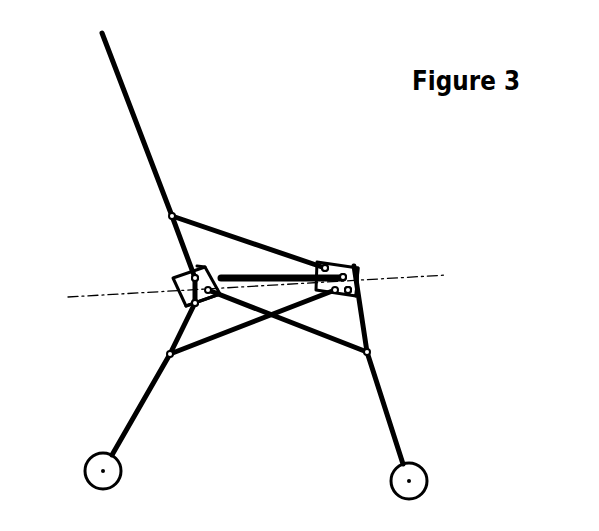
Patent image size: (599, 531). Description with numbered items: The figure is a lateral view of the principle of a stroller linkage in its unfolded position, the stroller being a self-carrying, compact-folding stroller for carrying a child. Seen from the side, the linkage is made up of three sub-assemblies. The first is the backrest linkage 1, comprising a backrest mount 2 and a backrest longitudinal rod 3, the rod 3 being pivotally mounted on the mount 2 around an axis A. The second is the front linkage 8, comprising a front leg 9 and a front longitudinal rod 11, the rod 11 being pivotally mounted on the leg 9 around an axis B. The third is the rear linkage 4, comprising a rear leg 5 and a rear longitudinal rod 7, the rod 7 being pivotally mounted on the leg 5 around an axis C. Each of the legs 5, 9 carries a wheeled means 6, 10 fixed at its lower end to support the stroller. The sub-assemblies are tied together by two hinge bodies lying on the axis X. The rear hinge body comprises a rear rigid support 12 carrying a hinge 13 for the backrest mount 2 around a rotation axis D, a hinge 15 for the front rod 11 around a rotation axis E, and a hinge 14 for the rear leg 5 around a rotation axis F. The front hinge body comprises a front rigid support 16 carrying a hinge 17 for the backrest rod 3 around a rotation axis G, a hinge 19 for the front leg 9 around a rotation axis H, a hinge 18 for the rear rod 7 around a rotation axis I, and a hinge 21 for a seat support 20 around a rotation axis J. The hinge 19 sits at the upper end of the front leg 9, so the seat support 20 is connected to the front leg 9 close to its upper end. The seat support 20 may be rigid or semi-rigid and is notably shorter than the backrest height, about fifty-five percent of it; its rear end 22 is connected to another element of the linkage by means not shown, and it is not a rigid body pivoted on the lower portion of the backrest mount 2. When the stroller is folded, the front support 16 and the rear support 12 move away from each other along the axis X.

The backrest linkage 1 is at (190, 121).
The backrest mount 2 is at (142, 138).
The backrest longitudinal rod 3 is at (277, 271).
The rear linkage 4 is at (120, 393).
The rear leg 5 is at (132, 430).
The wheeled means 6 is at (84, 472).
The rear longitudinal rod 7 is at (220, 336).
The front linkage 8 is at (400, 380).
The front leg 9 is at (388, 430).
The wheeled means 10 is at (430, 477).
The front longitudinal rod 11 is at (303, 330).
The rear rigid support 12 is at (188, 306).
The hinge 13 is at (190, 276).
The hinge 14 is at (190, 303).
The hinge 15 is at (200, 289).
The front rigid support 16 is at (362, 294).
The hinge 17 is at (336, 262).
The hinge 18 is at (353, 268).
The hinge 19 is at (356, 288).
The seat support 20 is at (318, 260).
The hinge 21 is at (358, 275).
The rear end 22 is at (215, 266).
The axis A is at (168, 216).
The axis B is at (373, 352).
The axis C is at (167, 355).
The rotation axis D is at (190, 276).
The rotation axis E is at (198, 266).
The rotation axis F is at (190, 304).
The rotation axis G is at (322, 264).
The rotation axis H is at (360, 286).
The rotation axis I is at (335, 294).
The rotation axis J is at (358, 262).
The axis X-X' X is at (251, 286).